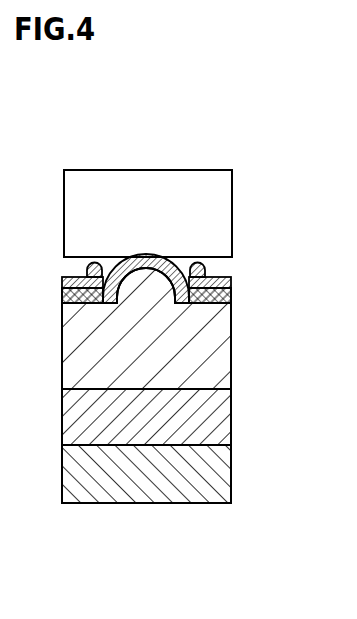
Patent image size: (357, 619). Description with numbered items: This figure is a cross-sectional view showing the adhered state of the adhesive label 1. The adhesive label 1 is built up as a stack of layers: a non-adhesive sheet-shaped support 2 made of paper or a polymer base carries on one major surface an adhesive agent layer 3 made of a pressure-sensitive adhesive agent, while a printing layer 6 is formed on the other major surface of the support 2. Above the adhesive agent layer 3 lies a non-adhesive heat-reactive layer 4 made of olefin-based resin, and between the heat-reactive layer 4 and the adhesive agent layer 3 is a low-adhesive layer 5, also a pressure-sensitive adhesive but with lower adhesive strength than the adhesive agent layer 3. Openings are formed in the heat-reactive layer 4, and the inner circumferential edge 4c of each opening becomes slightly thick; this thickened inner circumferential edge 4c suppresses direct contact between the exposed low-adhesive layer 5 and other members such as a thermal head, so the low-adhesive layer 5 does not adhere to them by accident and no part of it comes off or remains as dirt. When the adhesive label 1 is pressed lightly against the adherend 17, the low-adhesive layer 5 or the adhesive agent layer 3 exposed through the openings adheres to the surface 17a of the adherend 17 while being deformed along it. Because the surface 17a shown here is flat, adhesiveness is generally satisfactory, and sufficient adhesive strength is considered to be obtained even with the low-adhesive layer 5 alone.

The adhesive label 1 is at (164, 391).
The support 2 is at (197, 417).
The adhesive agent layer 3 is at (208, 340).
The heat-reactive layer 4 is at (232, 283).
The inner circumferential edge 4c is at (197, 260).
The low-adhesive layer 5 is at (232, 293).
The printing layer 6 is at (208, 479).
The adherend 17 is at (133, 188).
The surface 17a is at (90, 254).